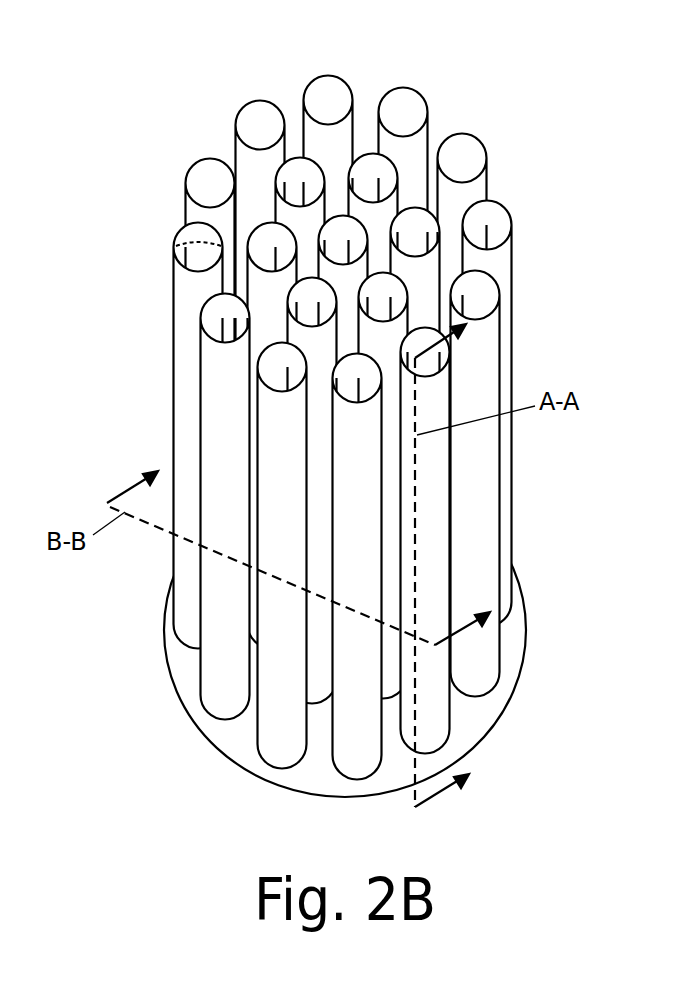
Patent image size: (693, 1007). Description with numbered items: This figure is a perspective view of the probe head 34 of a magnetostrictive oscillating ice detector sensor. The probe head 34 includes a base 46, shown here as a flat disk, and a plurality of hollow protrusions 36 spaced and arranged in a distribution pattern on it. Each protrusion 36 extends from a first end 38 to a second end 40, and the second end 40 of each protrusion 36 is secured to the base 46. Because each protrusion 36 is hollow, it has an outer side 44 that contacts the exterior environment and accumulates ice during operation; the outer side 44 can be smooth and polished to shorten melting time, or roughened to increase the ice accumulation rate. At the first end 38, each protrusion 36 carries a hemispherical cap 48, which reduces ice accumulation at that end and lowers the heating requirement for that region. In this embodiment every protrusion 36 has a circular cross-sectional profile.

The probe head 34 is at (362, 406).
The protrusion 36 is at (341, 405).
The first end 38 is at (500, 218).
The second end 40 is at (395, 630).
The outer side 44 is at (483, 533).
The base 46 is at (238, 732).
The hemispherical cap 48 is at (177, 238).